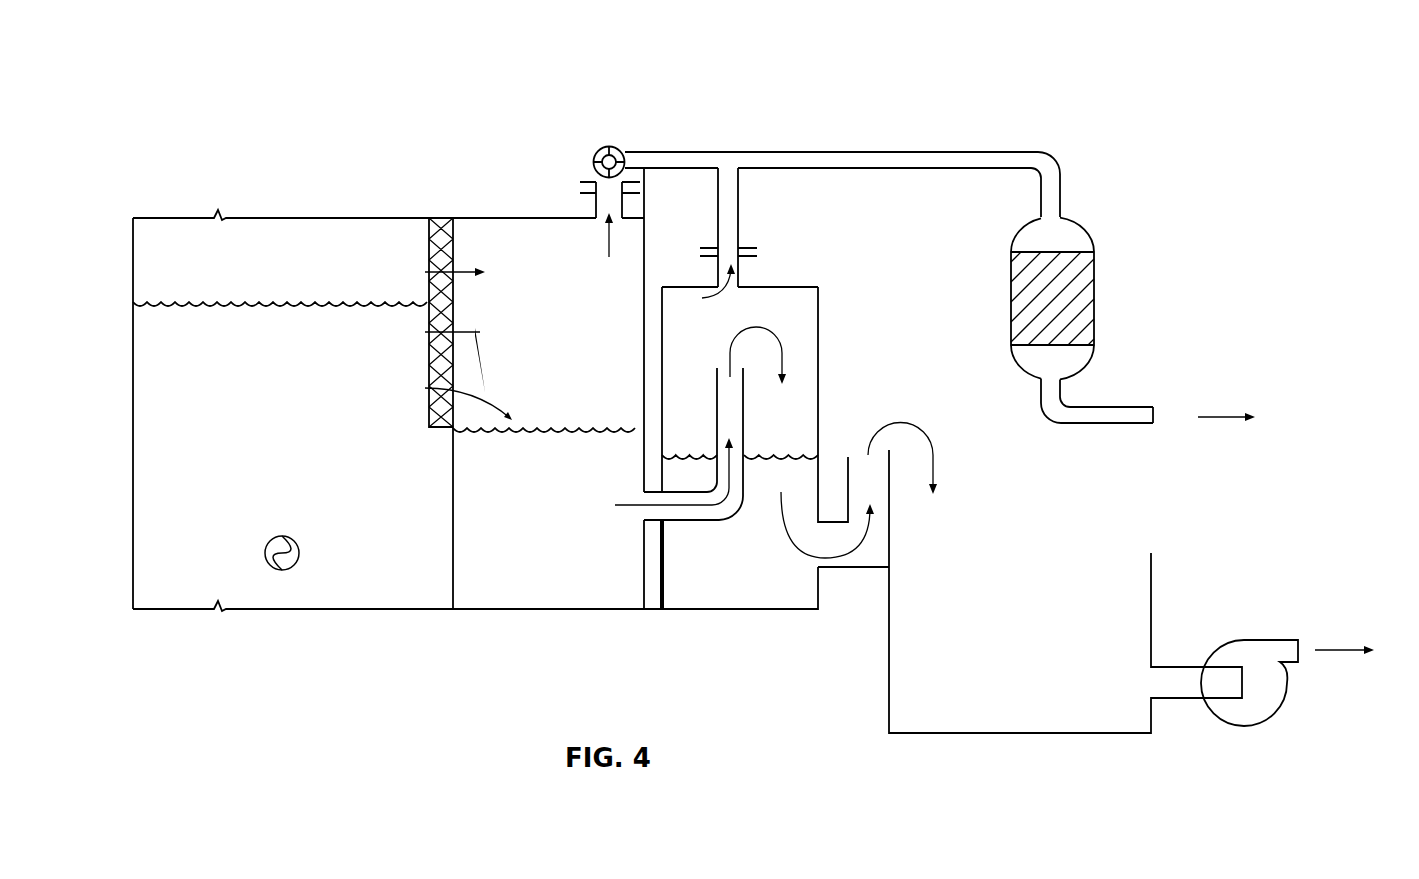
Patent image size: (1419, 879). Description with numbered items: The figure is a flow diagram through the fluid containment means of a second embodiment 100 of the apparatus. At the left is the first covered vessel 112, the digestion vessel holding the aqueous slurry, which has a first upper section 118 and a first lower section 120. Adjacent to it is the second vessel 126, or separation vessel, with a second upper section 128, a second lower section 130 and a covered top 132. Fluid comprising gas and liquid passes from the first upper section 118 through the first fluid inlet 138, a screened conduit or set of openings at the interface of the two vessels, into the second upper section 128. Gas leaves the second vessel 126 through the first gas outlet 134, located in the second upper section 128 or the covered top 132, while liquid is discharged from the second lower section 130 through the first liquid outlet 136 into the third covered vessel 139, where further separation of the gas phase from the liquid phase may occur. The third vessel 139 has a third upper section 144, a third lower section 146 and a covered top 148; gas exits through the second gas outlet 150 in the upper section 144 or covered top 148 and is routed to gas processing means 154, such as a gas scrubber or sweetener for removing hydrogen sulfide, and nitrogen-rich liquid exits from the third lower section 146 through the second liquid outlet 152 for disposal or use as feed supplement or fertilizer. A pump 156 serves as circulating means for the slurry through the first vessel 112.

The second embodiment 100 is at (623, 73).
The first covered vessel 112 is at (237, 202).
The first upper section 118 is at (288, 278).
The first lower section 120 is at (300, 449).
The second vessel 126 is at (480, 198).
The second upper section 128 is at (608, 329).
The second lower section 130 is at (585, 487).
The covered top 132 is at (528, 203).
The first gas outlet 134 is at (603, 222).
The first liquid outlet 136 is at (707, 522).
The first fluid inlet 138 is at (453, 308).
The third covered vessel 139 is at (820, 328).
The third upper section 144 is at (767, 320).
The third lower section 146 is at (768, 584).
The covered top 148 is at (815, 285).
The second gas outlet 150 is at (740, 275).
The second liquid outlet 152 is at (860, 438).
The gas processing means 154 is at (1094, 283).
The pump 156 is at (1278, 731).